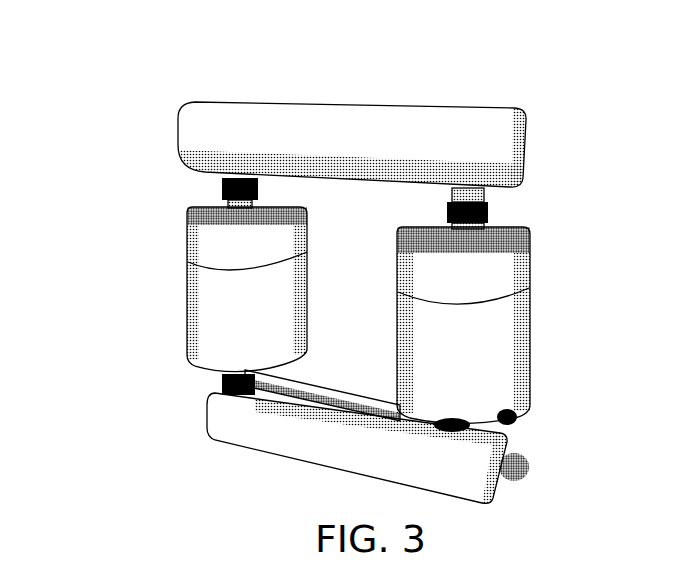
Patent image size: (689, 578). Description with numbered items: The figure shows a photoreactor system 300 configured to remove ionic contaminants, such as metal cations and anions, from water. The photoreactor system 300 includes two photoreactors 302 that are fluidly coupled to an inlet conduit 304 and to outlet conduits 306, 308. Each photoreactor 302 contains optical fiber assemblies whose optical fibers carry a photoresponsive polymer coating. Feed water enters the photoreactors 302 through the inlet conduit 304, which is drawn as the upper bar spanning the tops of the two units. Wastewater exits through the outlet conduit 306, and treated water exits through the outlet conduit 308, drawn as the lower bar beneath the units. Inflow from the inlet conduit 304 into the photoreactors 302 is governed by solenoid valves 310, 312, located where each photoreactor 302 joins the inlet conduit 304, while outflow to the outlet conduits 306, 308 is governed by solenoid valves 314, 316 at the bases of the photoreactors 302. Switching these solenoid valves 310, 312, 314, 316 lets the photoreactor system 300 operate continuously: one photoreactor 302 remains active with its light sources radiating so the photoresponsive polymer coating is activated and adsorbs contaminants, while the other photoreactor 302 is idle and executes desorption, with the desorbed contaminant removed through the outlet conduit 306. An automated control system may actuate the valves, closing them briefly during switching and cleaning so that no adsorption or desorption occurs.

The photoreactor system 300 is at (130, 52).
The photoreactor 302 is at (258, 314).
The inlet conduit 304 is at (348, 146).
The outlet conduit 306 is at (375, 395).
The outlet conduit 308 is at (353, 452).
The solenoid valve 310 is at (258, 188).
The solenoid valve 312 is at (490, 210).
The solenoid valve 314 is at (222, 385).
The solenoid valve 316 is at (512, 418).